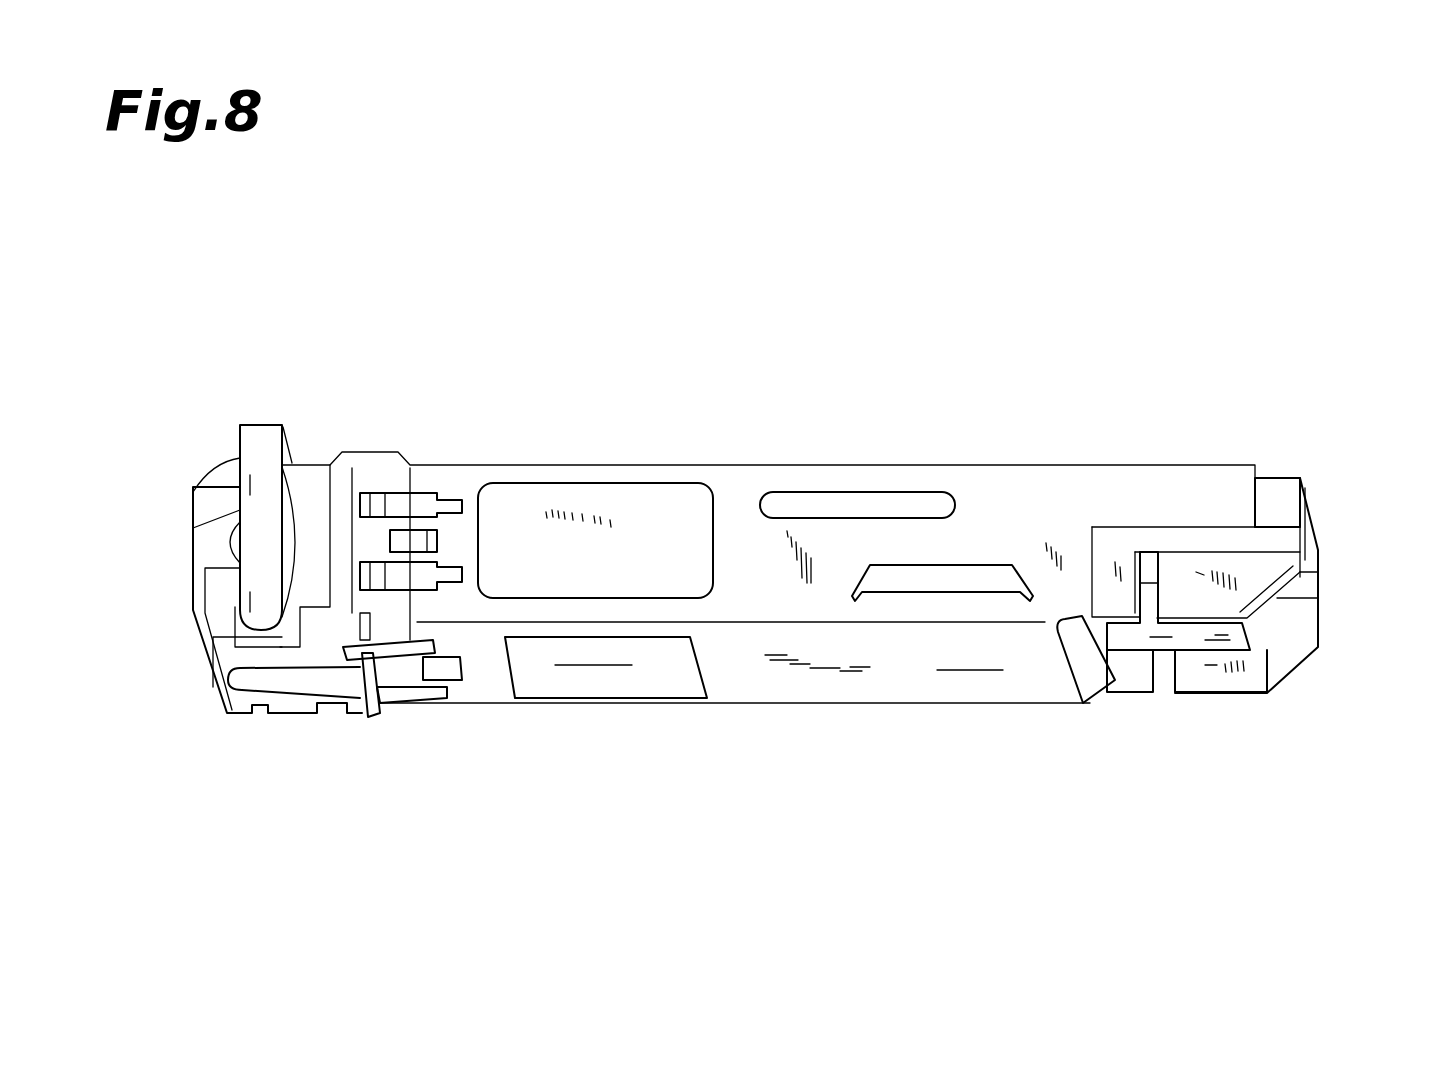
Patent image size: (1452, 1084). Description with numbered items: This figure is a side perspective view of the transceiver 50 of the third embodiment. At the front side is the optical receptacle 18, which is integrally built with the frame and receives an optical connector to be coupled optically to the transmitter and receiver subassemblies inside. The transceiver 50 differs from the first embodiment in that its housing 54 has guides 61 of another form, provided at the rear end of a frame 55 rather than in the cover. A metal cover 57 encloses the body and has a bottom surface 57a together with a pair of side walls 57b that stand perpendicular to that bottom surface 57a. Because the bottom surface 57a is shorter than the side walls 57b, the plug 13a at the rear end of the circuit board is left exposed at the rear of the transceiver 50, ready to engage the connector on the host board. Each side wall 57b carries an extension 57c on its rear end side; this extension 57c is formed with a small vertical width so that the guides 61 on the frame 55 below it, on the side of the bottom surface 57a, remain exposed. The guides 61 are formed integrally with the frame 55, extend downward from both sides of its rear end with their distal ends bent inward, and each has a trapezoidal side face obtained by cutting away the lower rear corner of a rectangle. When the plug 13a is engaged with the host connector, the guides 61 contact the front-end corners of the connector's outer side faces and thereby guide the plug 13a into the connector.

The transceiver 50 is at (466, 342).
The optical receptacle 18 is at (205, 505).
The extension 57c is at (1170, 493).
The side walls 57b is at (822, 590).
The bottom surface 57a is at (937, 658).
The metal cover 57 is at (995, 812).
The frame 55 is at (1120, 597).
The housing 54 is at (1092, 862).
The guides 61 is at (1267, 577).
The plug 13a is at (1200, 637).